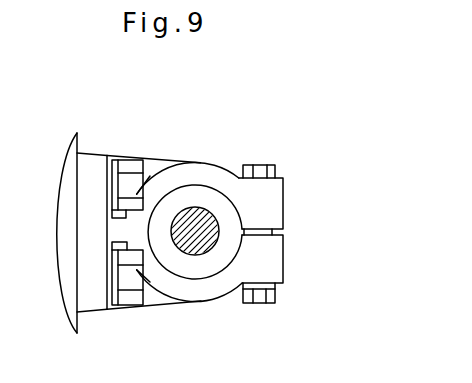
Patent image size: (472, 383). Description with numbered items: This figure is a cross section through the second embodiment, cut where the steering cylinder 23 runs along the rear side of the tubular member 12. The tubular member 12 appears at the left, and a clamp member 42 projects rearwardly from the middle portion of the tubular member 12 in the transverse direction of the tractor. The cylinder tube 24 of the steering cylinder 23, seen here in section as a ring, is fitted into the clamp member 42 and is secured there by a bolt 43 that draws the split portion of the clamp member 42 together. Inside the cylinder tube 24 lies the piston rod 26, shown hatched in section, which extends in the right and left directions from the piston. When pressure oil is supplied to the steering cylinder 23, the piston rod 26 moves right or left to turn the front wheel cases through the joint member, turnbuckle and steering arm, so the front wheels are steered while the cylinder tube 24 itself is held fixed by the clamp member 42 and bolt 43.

The tubular member 12 is at (78, 150).
The steering cylinder 23 is at (210, 179).
The cylinder tube 24 is at (180, 181).
The piston rod 26 is at (197, 250).
The clamp member 42 is at (152, 298).
The bolt 43 is at (264, 304).